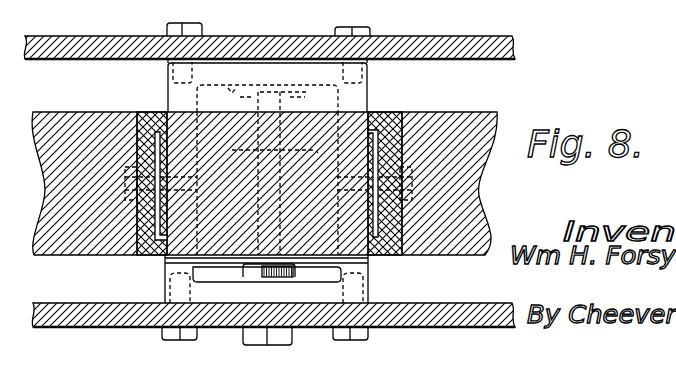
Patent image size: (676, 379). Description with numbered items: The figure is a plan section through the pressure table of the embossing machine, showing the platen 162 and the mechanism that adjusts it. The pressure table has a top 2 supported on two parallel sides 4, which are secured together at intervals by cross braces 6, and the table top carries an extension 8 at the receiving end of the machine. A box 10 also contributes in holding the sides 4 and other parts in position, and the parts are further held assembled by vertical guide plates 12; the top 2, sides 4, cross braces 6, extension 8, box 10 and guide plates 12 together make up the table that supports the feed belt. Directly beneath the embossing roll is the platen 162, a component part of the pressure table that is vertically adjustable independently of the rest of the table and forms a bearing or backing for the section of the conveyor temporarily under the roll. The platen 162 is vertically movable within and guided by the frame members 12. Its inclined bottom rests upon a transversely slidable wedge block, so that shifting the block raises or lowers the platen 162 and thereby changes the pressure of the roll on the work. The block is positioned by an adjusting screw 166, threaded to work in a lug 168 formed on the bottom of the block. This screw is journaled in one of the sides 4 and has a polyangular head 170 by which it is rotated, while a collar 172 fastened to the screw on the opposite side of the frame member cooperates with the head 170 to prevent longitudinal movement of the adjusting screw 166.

The table top 2 is at (115, 124).
The sides 4 is at (449, 46).
The cross braces 6 is at (373, 0).
The extension 8 is at (475, 147).
The box 10 is at (362, 100).
The vertical guide plates 12 is at (153, 252).
The platen 162 is at (217, 128).
The adjusting screw 166 is at (253, 288).
The lug 168 is at (247, 80).
The polyangular head 170 is at (283, 337).
The collar 172 is at (286, 277).